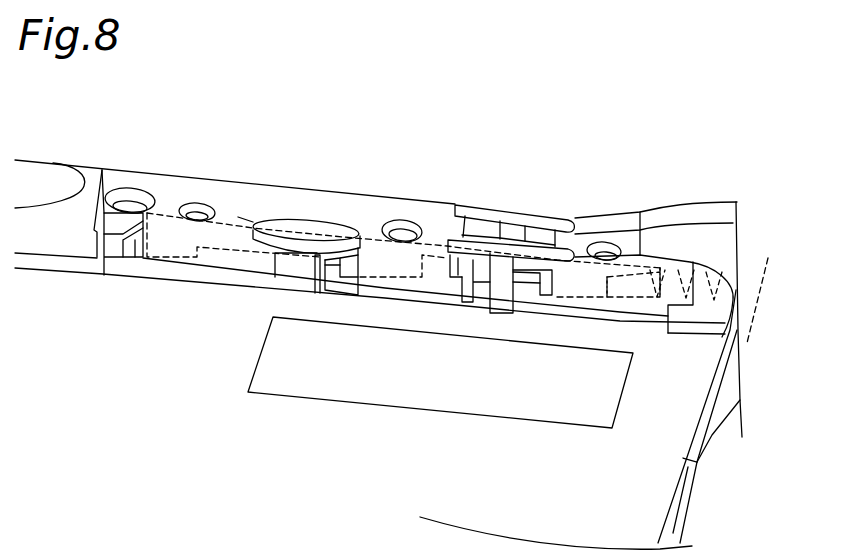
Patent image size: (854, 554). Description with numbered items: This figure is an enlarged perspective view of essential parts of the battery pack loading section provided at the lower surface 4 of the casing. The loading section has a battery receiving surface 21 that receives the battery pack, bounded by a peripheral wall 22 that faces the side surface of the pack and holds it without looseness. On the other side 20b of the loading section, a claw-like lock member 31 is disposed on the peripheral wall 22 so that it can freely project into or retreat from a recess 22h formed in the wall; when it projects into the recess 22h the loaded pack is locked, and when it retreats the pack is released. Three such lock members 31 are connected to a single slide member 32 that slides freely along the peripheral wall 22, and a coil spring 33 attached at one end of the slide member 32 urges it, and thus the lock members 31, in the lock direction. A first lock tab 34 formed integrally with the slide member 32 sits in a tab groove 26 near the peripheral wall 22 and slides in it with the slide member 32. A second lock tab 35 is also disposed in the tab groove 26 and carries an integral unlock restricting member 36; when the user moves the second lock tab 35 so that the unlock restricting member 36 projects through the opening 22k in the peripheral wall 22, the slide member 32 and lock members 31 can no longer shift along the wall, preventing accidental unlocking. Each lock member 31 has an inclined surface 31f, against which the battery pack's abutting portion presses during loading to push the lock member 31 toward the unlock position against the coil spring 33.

The lower surface 4 is at (400, 202).
The other side of the battery pack loading section 20b is at (231, 236).
The battery receiving surface 21 is at (647, 489).
The peripheral wall 22 is at (237, 263).
The recess 22h is at (117, 242).
The opening 22k is at (452, 272).
The tab groove 26 is at (540, 228).
The lock member 31 is at (129, 222).
The inclined surface 31f is at (131, 205).
The slide member 32 is at (650, 257).
The coil spring 33 is at (717, 287).
The lock tab 34 is at (513, 226).
The second lock tab 35 is at (478, 223).
The unlock restricting member 36 is at (470, 263).